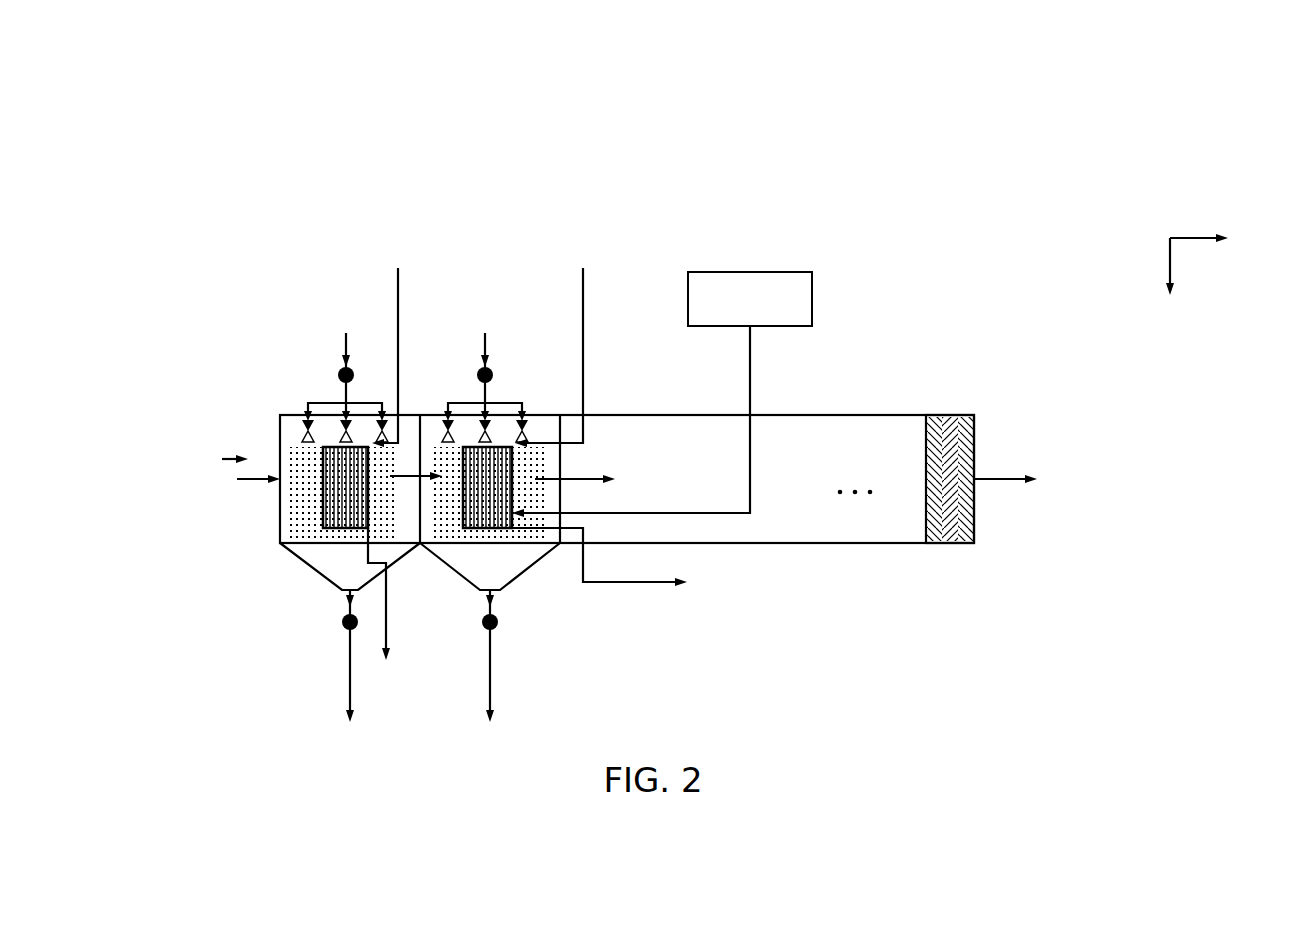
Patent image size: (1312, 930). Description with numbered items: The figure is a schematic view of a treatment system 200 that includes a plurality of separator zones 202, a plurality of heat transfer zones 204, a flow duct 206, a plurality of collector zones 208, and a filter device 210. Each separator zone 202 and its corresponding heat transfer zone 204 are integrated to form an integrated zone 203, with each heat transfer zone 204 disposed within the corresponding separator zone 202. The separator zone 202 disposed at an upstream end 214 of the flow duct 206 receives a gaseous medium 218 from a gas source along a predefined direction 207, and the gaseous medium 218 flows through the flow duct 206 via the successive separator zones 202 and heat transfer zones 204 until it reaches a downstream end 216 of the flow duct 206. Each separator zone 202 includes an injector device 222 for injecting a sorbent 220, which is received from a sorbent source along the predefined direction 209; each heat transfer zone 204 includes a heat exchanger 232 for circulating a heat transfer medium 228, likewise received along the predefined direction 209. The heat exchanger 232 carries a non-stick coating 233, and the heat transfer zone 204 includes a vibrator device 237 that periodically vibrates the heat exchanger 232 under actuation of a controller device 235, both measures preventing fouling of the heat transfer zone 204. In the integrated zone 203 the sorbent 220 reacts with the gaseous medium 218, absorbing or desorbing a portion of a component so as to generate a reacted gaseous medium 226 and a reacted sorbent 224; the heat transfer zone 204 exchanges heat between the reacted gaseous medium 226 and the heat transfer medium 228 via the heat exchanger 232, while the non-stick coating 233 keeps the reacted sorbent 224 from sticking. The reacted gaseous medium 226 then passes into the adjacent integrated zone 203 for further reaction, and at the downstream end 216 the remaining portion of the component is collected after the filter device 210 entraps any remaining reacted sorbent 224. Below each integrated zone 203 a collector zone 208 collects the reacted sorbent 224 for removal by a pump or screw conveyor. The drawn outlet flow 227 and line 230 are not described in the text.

The treatment system 200 is at (1188, 104).
The separator zone 202 is at (430, 424).
The integrated zone 203 is at (278, 524).
The heat transfer zone 204 is at (313, 530).
The flow duct 206 is at (866, 415).
The predefined direction 207 is at (1185, 237).
The collector zone 208 is at (322, 563).
The predefined direction 209 is at (1165, 262).
The filter device 210 is at (946, 543).
The upstream end 214 is at (213, 460).
The downstream end 216 is at (1000, 518).
The gaseous medium 218 is at (262, 483).
The sorbent 220 is at (345, 340).
The injector device 222 is at (340, 440).
The reacted sorbent 224 is at (345, 597).
The reacted gaseous medium 226 is at (410, 477).
The treated gas outlet 227 is at (1012, 477).
The heat transfer medium 228 is at (398, 280).
The filtered gas outlet pipe 230 is at (388, 664).
The heat exchanger 232 is at (347, 530).
The non-stick coating 233 is at (297, 445).
The controller device 235 is at (750, 272).
The vibrator device 237 is at (500, 441).